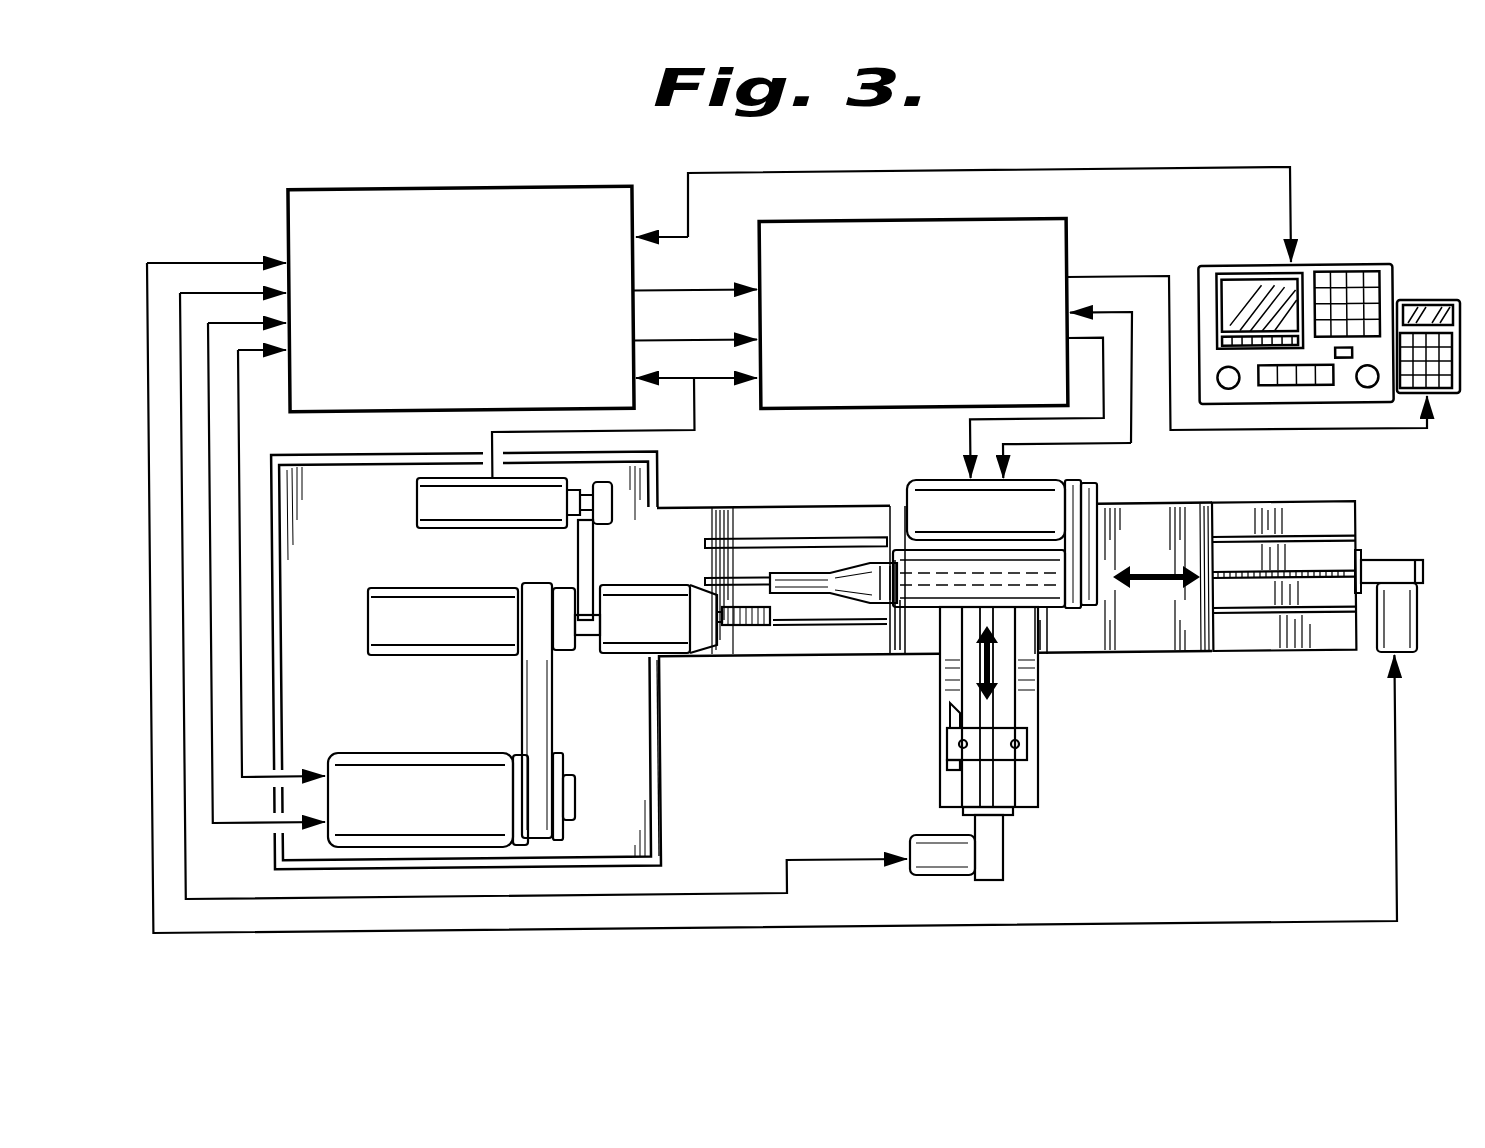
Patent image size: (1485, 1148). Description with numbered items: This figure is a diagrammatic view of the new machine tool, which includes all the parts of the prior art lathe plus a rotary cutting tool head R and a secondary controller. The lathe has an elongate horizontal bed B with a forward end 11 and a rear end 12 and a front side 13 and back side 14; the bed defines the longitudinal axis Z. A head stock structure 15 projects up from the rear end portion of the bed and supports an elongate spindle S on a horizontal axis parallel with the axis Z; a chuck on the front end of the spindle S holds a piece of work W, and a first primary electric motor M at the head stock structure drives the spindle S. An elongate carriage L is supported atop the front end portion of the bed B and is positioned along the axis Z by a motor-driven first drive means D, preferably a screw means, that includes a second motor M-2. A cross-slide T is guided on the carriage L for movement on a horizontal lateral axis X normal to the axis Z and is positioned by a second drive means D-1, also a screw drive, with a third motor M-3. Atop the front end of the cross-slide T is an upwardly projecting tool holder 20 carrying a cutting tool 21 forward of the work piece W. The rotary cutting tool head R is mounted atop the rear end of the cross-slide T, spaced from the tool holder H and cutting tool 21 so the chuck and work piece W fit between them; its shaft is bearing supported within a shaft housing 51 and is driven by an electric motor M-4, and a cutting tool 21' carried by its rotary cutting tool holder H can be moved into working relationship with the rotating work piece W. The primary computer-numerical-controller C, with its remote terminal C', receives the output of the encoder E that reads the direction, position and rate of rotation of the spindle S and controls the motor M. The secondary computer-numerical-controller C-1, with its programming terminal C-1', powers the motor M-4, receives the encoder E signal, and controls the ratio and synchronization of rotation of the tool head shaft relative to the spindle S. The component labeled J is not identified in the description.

The primary computer-numerical-controller C is at (461, 273).
The secondary computer-numerical-controller C-1 is at (913, 290).
The remote terminal C' is at (1295, 286).
The programming terminal C-1' is at (1416, 306).
The electric motor M-4 is at (925, 478).
The rotary cutting tool head R is at (1045, 476).
The bed B is at (718, 505).
The carriage L is at (1203, 500).
The forward end 11 is at (1355, 503).
The first drive means D is at (1397, 558).
The encoder E is at (416, 502).
The back side 14 is at (782, 506).
The tool holder H is at (862, 570).
The chuck J is at (662, 584).
The spindle S is at (366, 612).
The work piece W is at (768, 632).
The cutting tool 21' is at (833, 632).
The front side 13 is at (868, 660).
The rear end 12 is at (262, 662).
The head stock structure 15 is at (640, 697).
The shaft housing 51 is at (1050, 609).
The longitudinal axis Z is at (1162, 584).
The second motor M-2 is at (1378, 652).
The cutting tool 21 is at (904, 716).
The tool holder 20 is at (947, 740).
The lateral axis X is at (995, 697).
The cross-slide T is at (1041, 770).
The first primary electric motor M is at (433, 753).
The third motor M-3 is at (920, 836).
The second drive means D-1 is at (1006, 857).